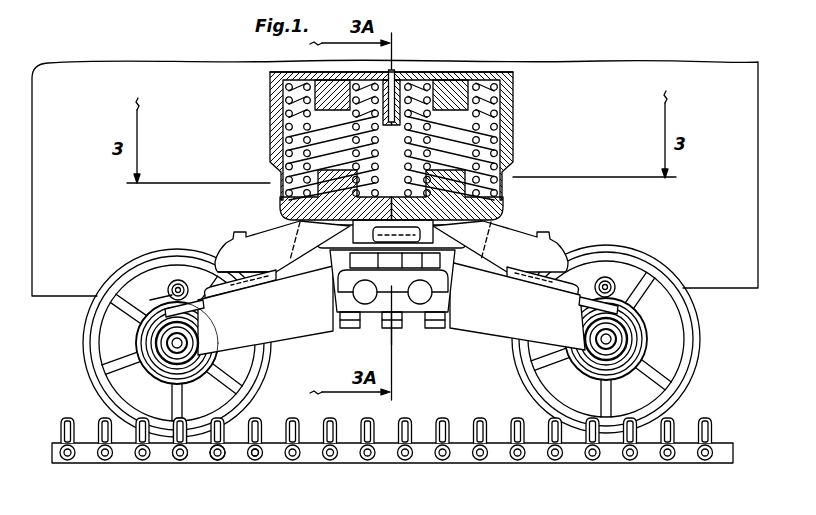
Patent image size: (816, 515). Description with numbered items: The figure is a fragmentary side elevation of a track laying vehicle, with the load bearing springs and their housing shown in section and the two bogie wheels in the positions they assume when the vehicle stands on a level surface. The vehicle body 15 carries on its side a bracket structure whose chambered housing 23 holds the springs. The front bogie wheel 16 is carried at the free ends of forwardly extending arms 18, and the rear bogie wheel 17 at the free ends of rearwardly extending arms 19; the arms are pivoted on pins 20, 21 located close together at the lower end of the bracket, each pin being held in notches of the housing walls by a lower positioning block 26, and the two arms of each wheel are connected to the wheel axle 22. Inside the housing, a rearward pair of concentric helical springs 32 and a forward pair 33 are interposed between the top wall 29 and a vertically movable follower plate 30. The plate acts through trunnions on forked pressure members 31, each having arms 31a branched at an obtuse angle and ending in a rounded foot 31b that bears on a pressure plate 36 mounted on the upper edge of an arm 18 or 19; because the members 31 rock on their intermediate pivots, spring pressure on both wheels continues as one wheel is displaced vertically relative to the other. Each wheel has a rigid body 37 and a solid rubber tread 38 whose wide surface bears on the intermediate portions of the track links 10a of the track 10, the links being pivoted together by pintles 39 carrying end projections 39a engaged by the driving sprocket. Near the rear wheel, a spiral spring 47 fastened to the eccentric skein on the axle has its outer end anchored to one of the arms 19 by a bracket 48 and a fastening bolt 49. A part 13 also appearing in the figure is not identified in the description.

The track link 10 is at (122, 463).
The track links 10a is at (172, 462).
The spring housing 13 is at (397, 126).
The vehicle body 15 is at (620, 68).
The front bogie wheel 16 is at (698, 337).
The rear bogie wheel 17 is at (170, 303).
The forwardly extending arms 18 is at (497, 320).
The rearwardly extending arms 19 is at (301, 325).
The pin 20 is at (421, 305).
The pin 21 is at (367, 305).
The wheel axle 22 is at (183, 344).
The housing 23 is at (283, 125).
The lower positioning block 26 is at (338, 303).
The top wall 29 is at (428, 74).
The follower plate 30 is at (498, 208).
The forked pressure member 31 is at (505, 234).
The arms of pressure member 31a is at (295, 240).
The rounded foot part 31b is at (250, 258).
The rearward pair of concentric helical springs 32 is at (288, 104).
The forward pair of concentric helical springs 33 is at (507, 123).
The pressure plate 36 is at (226, 283).
The rigid wheel body 37 is at (98, 364).
The solid rubber tread 38 is at (97, 386).
The pintles 39 is at (217, 462).
The pintle projections 39a is at (253, 462).
The spiral spring 47 is at (213, 372).
The bracket 48 is at (172, 291).
The fastening bolt 49 is at (177, 280).